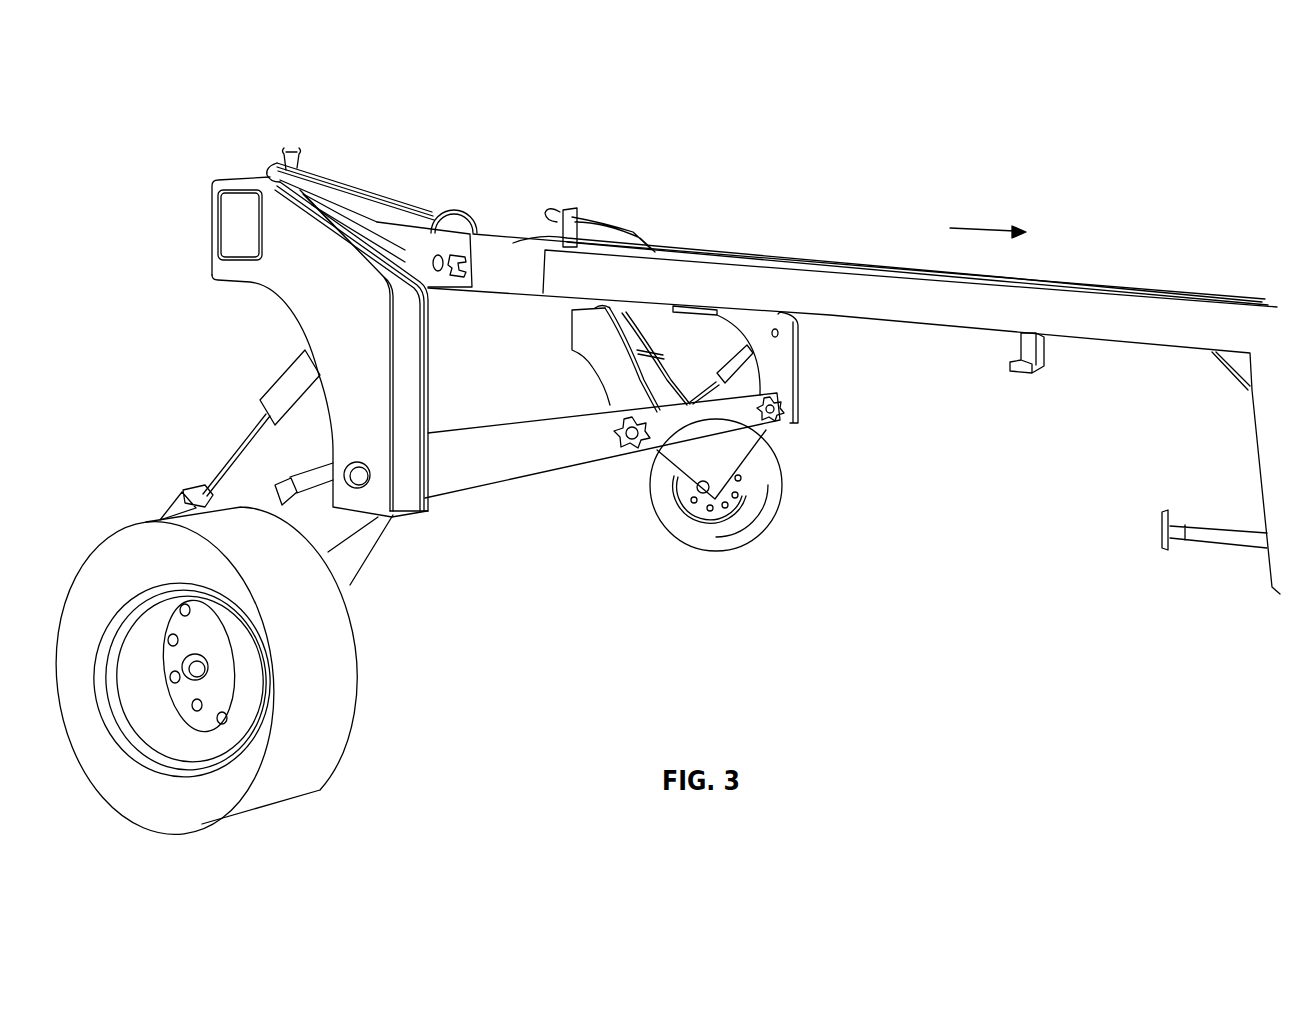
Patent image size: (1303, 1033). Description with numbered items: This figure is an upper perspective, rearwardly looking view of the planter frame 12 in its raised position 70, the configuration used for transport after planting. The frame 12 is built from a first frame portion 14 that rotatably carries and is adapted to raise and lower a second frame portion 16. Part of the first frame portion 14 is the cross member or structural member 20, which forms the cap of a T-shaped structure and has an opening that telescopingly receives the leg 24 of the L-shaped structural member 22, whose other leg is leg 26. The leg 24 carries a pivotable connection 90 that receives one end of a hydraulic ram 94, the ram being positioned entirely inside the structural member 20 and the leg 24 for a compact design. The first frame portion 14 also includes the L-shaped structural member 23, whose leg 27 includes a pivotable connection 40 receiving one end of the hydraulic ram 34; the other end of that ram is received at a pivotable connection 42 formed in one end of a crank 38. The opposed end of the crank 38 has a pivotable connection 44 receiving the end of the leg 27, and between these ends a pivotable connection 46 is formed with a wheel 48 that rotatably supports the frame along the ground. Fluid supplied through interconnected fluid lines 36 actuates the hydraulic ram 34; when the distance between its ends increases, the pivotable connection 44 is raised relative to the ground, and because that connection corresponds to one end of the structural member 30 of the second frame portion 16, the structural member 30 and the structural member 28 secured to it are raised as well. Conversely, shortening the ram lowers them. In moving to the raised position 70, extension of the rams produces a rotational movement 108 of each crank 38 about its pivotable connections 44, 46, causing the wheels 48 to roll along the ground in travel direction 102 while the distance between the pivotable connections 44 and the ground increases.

The frame 12 is at (813, 193).
The frame portion 14 is at (881, 192).
The frame portion 16 is at (514, 566).
The structural member 20 is at (492, 292).
The structural member 22 is at (220, 150).
The structural member 23 is at (735, 228).
The leg 24 is at (436, 222).
The leg 26 is at (432, 360).
The leg 27 is at (797, 380).
The structural member 28 is at (578, 378).
The structural member 30 is at (530, 480).
The hydraulic ram 34 is at (276, 372).
The fluid lines 36 is at (333, 165).
The crank 38 is at (770, 470).
The pivotable connection 40 is at (353, 297).
The pivotable connection 42 is at (630, 447).
The pivotable connection 44 is at (783, 412).
The pivotable connection 46 is at (710, 490).
The wheel 48 is at (778, 500).
The raised position 70 is at (696, 135).
The pivotable connection 90 is at (437, 256).
The hydraulic ram 94 is at (470, 250).
The travel direction 102 is at (985, 226).
The rotational movement 108 is at (720, 562).